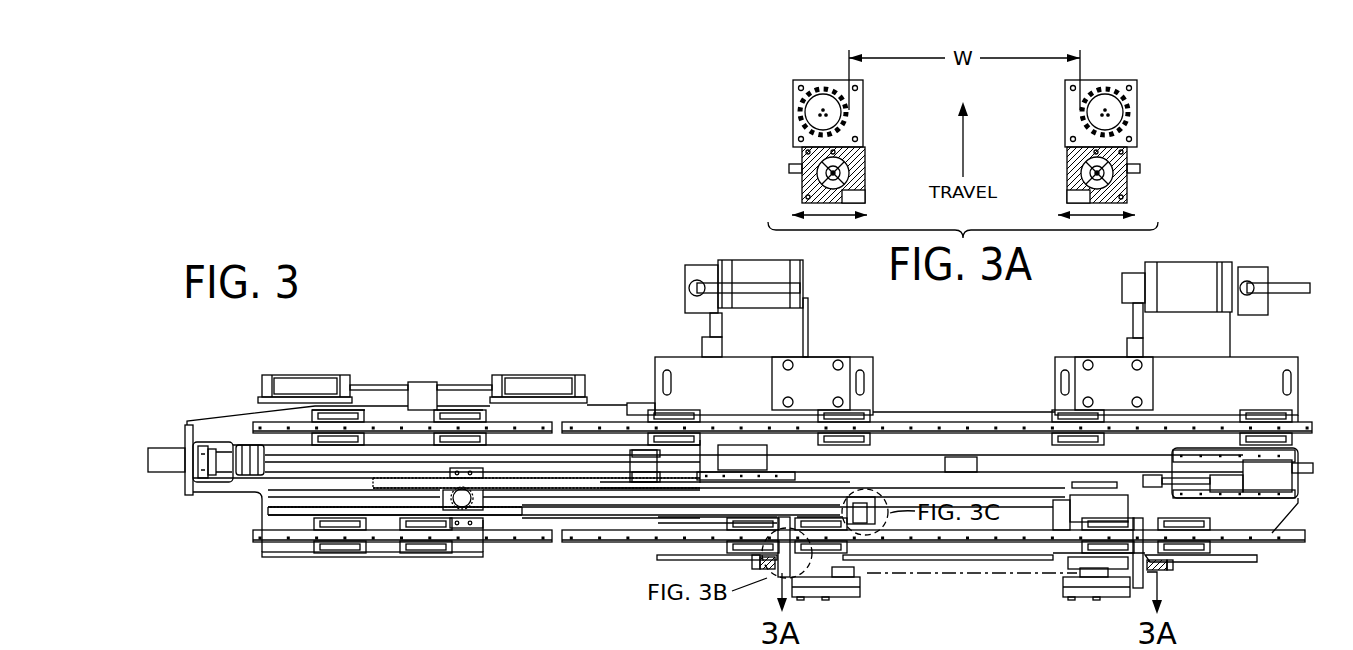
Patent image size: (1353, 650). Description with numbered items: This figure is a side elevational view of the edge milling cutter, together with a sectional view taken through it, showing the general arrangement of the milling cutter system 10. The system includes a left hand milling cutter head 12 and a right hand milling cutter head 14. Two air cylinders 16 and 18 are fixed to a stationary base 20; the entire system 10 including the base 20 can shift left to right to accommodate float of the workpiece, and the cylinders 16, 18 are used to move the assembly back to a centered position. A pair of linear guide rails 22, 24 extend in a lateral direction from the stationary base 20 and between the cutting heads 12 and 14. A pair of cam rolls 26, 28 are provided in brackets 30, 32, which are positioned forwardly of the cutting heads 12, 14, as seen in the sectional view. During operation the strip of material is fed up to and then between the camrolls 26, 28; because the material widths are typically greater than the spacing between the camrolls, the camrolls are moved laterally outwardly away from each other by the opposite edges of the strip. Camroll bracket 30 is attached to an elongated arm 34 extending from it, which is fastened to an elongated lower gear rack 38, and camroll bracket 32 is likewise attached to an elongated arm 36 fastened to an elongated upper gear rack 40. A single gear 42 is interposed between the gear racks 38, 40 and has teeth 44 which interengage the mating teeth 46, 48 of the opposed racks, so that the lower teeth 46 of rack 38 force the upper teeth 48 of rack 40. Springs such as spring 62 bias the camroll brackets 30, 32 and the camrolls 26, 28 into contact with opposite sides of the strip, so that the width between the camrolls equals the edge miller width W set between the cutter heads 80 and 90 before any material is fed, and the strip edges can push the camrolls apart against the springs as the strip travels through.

In FIG. 3, the milling cutter system 10 is at (436, 264).
In FIG. 3, the left hand milling cutter head 12 is at (751, 248).
In FIG. 3A, the left hand milling cutter head 12 is at (777, 71).
In FIG. 3, the right hand milling cutter head 14 is at (1199, 248).
In FIG. 3A, the right hand milling cutter head 14 is at (1148, 71).
In FIG. 3, the air cylinder 16 is at (299, 370).
In FIG. 3, the air cylinder 18 is at (531, 370).
In FIG. 3, the stationary base 20 is at (422, 385).
In FIG. 3, the linear guide rail 22 is at (622, 430).
In FIG. 3, the linear guide rail 24 is at (570, 543).
In FIG. 3A, the cam roll 26 is at (847, 168).
In FIG. 3A, the cam roll 28 is at (1086, 170).
In FIG. 3, the camroll bracket 30 is at (826, 578).
In FIG. 3A, the camroll bracket 30 is at (805, 170).
In FIG. 3, the camroll bracket 32 is at (1108, 578).
In FIG. 3A, the camroll bracket 32 is at (1130, 182).
In FIG. 3, the elongated arm 34 is at (612, 508).
In FIG. 3, the elongated arm 36 is at (1020, 490).
In FIG. 3, the lower gear rack 38 is at (307, 514).
In FIG. 3, the upper gear rack 40 is at (373, 481).
In FIG. 3, the gear 42 is at (440, 506).
In FIG. 3, the teeth 44 is at (487, 501).
In FIG. 3, the lower teeth 46 is at (385, 498).
In FIG. 3, the upper teeth 48 is at (392, 495).
In FIG. 3, the spring 62 is at (1170, 566).
In FIG. 3A, the cutter head 80 is at (1130, 110).
In FIG. 3A, the cutter head 90 is at (803, 110).